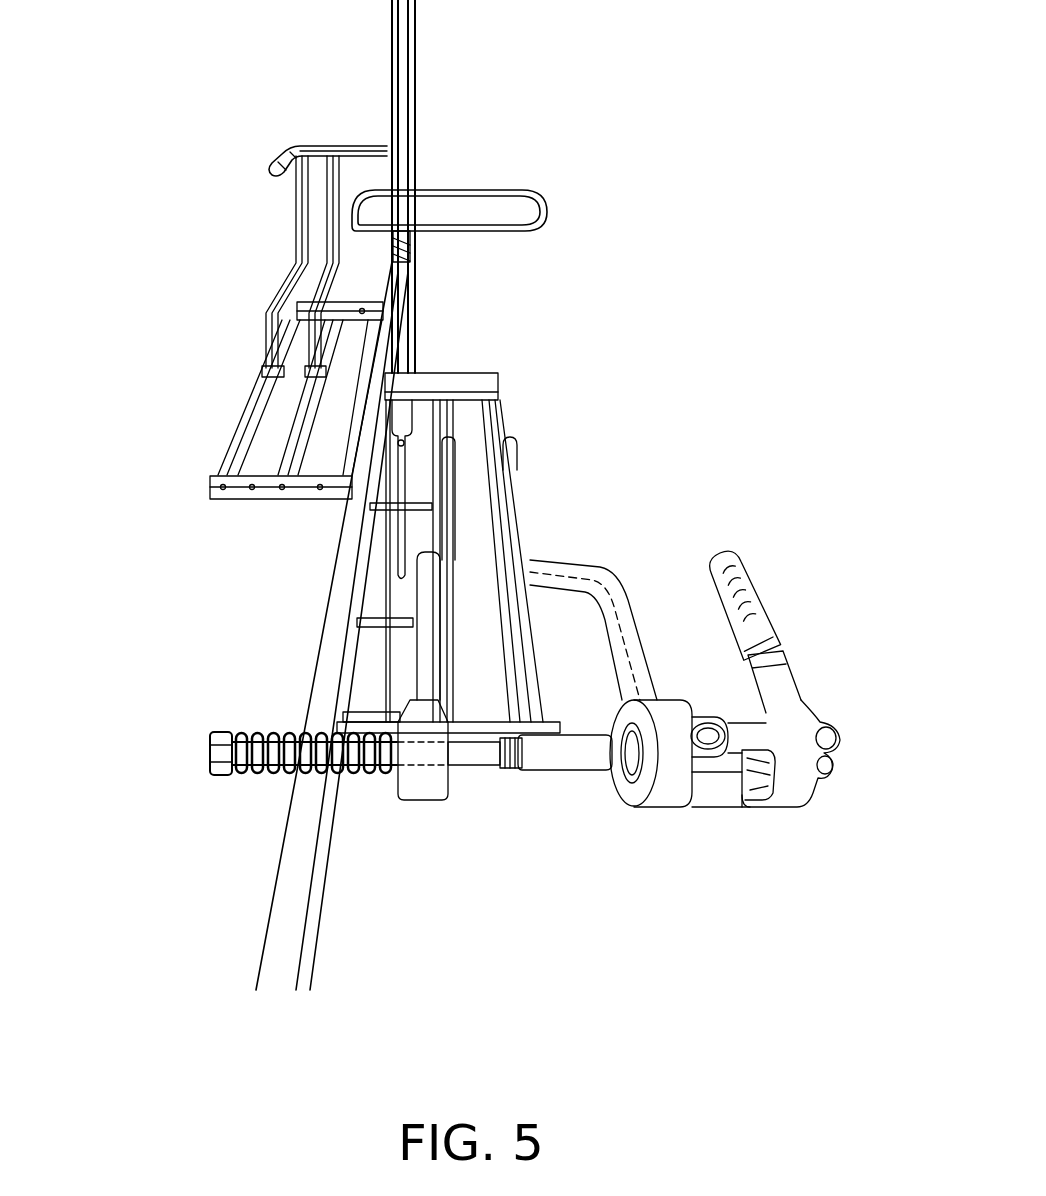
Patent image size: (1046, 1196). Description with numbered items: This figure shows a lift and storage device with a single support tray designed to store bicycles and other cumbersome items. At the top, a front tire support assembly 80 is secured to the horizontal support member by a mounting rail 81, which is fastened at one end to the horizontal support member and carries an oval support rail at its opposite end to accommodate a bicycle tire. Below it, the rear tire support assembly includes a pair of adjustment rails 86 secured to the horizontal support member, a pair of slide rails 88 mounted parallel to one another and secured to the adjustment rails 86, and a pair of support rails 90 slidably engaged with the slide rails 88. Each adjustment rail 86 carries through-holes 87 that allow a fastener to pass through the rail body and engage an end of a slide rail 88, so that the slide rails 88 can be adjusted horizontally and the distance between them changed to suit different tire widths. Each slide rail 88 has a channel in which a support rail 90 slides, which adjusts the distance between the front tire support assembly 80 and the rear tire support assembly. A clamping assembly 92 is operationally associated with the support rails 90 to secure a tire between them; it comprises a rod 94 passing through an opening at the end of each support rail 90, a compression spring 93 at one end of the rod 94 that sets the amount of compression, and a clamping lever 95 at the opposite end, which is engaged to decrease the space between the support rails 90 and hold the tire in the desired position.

The front tire support assembly 80 is at (510, 218).
The mounting rail 81 is at (402, 240).
The adjustment rails 86 is at (422, 375).
The through-holes 87 is at (250, 491).
The slide rails 88 is at (292, 433).
The support rails 90 is at (332, 216).
The clamping assembly 92 is at (288, 150).
The compression spring 93 is at (275, 773).
The rod 94 is at (480, 745).
The clamping lever 95 is at (800, 722).